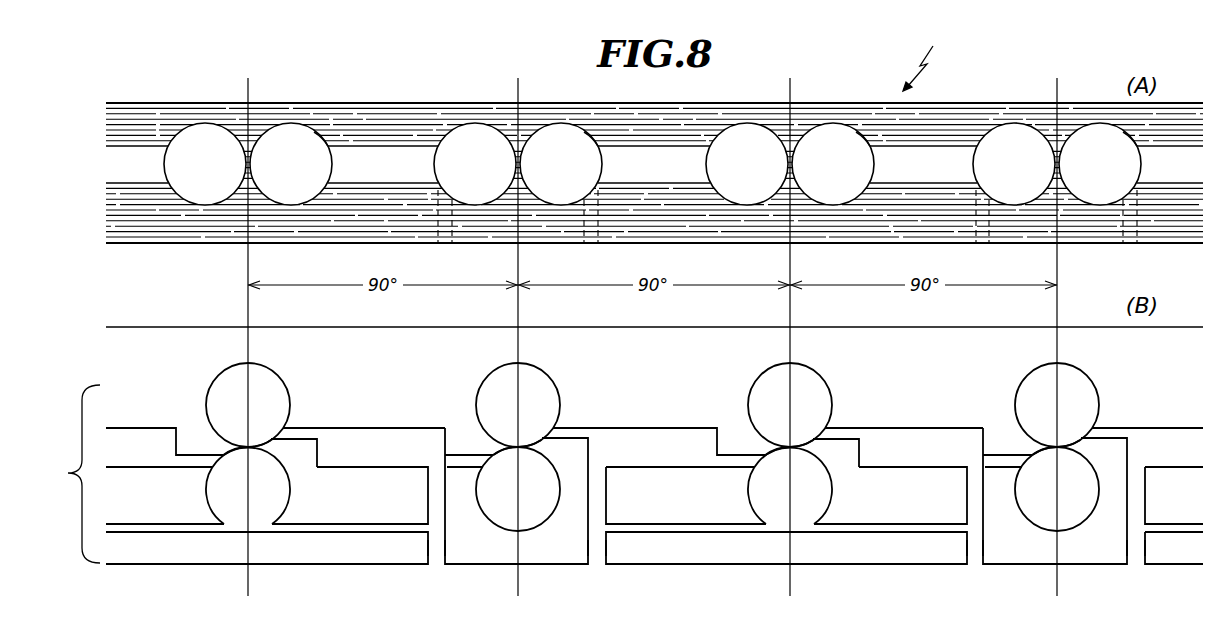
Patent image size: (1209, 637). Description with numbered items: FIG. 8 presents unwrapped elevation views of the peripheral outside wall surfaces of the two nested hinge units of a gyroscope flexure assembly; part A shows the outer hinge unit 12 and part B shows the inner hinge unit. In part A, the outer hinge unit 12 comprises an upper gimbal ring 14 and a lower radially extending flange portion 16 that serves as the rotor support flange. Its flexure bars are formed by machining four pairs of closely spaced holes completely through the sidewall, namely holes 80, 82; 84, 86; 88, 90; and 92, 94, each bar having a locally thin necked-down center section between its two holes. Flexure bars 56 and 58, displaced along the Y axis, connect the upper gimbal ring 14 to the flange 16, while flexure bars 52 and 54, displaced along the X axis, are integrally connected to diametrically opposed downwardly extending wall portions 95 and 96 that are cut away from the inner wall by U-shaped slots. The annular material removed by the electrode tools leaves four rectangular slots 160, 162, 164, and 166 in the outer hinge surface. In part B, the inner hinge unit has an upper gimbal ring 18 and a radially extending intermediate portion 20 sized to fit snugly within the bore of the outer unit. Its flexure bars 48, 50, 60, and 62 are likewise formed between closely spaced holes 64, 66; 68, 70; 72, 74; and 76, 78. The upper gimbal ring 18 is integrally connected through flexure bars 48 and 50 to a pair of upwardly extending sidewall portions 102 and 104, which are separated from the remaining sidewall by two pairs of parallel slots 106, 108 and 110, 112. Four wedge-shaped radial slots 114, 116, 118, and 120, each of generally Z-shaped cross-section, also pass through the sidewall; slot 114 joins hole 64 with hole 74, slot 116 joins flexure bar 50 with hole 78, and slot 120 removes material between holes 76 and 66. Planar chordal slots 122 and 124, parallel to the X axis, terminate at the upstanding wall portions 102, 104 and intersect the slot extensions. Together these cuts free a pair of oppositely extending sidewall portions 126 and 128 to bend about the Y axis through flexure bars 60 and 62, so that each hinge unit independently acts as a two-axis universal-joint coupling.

The outer hinge unit 12 is at (932, 59).
The upper gimbal ring 14 is at (427, 105).
The lower radially extending flange portion 16 is at (360, 227).
The upper gimbal ring 18 is at (678, 361).
The intermediate portion 20 is at (67, 474).
The flexure bar 48 is at (516, 445).
The flexure bar 50 is at (1054, 446).
The flexure bar 52 is at (522, 166).
The flexure bar 54 is at (1063, 165).
The flexure bar 56 is at (794, 166).
The flexure bar 58 is at (252, 164).
The flexure bar 60 is at (788, 445).
The flexure bar 62 is at (246, 444).
The hole 64 is at (560, 392).
The hole 66 is at (548, 517).
The hole 68 is at (1092, 393).
The hole 70 is at (1078, 527).
The hole 72 is at (822, 390).
The hole 74 is at (818, 517).
The hole 76 is at (285, 387).
The hole 78 is at (284, 518).
The hole 80 is at (490, 199).
The hole 82 is at (596, 141).
The hole 84 is at (1030, 201).
The hole 86 is at (1127, 141).
The hole 88 is at (768, 193).
The hole 90 is at (858, 134).
The hole 92 is at (321, 140).
The hole 94 is at (212, 198).
The downwardly extending wall portion 95 is at (540, 233).
The downwardly extending wall portion 96 is at (1074, 233).
The upwardly extending sidewall portion 102 is at (459, 549).
The upwardly extending sidewall portion 104 is at (996, 559).
The slot 106 is at (436, 561).
The slot 108 is at (598, 561).
The slot 110 is at (973, 561).
The slot 112 is at (1131, 561).
The wedge-shaped radial slot 114 is at (636, 459).
The wedge-shaped radial slot 116 is at (894, 456).
The wedge-shaped radial slot 118 is at (1154, 456).
The wedge-shaped radial slot 120 is at (363, 454).
The planar chordal slot 122 is at (702, 538).
The planar chordal slot 124 is at (337, 536).
The sidewall portion 126 is at (891, 514).
The sidewall portion 128 is at (346, 511).
The rectangular slot 160 is at (366, 176).
The rectangular slot 162 is at (641, 168).
The rectangular slot 164 is at (911, 176).
The rectangular slot 166 is at (1164, 171).